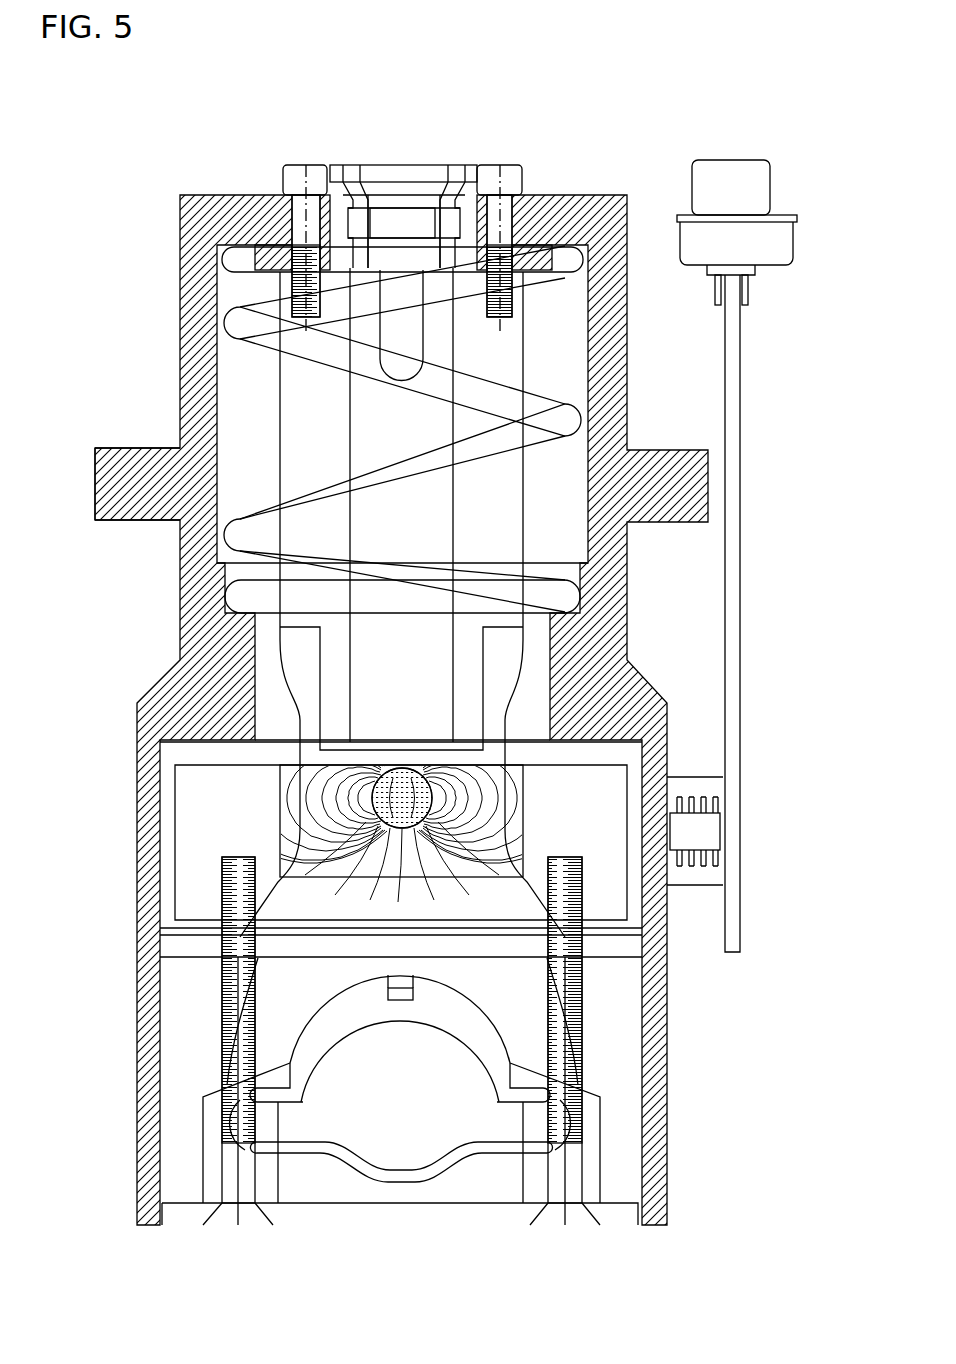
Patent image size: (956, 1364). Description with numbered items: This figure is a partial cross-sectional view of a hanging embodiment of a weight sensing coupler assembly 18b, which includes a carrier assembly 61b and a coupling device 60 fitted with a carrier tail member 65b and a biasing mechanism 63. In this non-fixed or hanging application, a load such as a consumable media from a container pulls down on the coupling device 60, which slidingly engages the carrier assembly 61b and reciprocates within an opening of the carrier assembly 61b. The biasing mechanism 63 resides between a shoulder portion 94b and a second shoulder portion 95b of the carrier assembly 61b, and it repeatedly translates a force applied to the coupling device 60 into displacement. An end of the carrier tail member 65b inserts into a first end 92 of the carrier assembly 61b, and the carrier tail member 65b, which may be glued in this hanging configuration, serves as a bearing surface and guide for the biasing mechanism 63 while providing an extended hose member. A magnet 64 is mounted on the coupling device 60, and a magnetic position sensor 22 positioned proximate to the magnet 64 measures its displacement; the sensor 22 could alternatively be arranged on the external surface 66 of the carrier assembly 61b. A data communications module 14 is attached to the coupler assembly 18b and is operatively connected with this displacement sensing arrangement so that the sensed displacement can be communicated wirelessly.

The first end 92 is at (404, 130).
The coupler assembly 18b is at (652, 126).
The carrier tail member 65b is at (358, 283).
The shoulder portion 94b is at (255, 250).
The carrier assembly 61b is at (130, 481).
The biasing mechanism 63 is at (238, 535).
The second shoulder portion 95b is at (240, 598).
The external surface 66 is at (625, 613).
The data communications module 14 is at (742, 731).
The magnetic position sensor 22 is at (702, 837).
The magnet 64 is at (402, 798).
The coupling device 60 is at (405, 947).